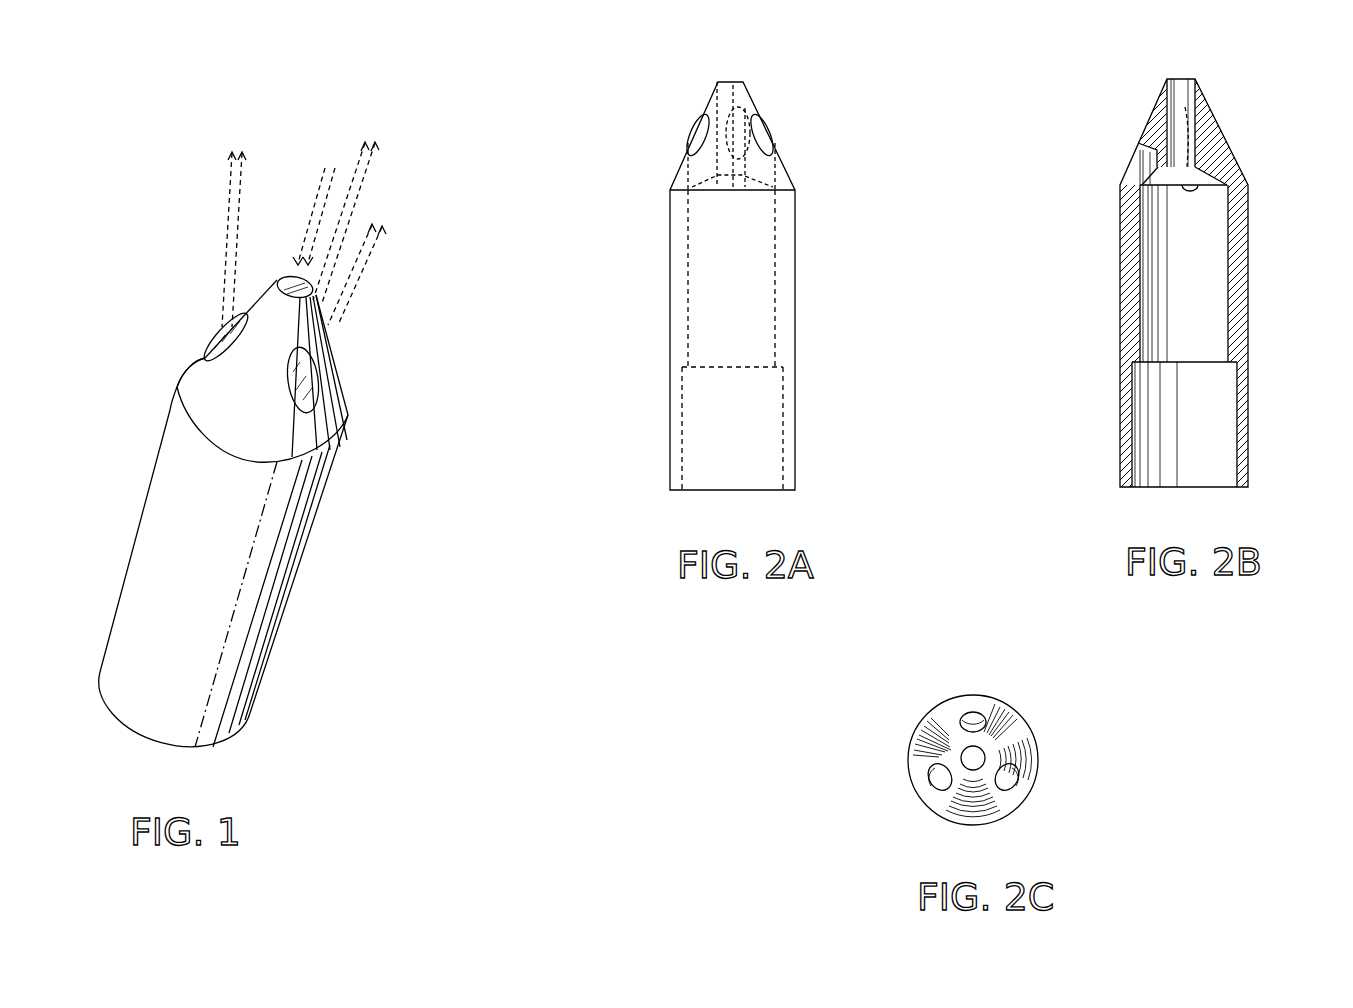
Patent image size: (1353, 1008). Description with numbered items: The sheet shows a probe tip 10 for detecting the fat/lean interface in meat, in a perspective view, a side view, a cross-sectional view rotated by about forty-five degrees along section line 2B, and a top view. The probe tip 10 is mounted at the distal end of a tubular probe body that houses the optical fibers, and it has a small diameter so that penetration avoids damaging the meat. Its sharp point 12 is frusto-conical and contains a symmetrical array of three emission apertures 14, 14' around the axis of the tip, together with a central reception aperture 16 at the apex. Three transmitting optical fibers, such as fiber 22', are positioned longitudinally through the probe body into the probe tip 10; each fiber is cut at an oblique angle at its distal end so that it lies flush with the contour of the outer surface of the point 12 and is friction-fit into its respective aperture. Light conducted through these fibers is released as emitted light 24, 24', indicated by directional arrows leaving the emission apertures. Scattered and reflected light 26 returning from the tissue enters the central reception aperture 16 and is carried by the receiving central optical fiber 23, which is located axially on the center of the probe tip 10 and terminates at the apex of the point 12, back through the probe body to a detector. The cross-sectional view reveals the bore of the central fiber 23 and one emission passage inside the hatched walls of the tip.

In FIG. 1, the probe tip 10 is at (368, 518).
In FIG. 2A, the probe tip 10 is at (847, 208).
In FIG. 2B, the probe tip 10 is at (1293, 210).
In FIG. 1, the point 12 is at (203, 400).
In FIG. 2A, the point 12 is at (753, 98).
In FIG. 2B, the point 12 is at (1227, 137).
In FIG. 2C, the point 12 is at (997, 818).
In FIG. 2A, the emission aperture 14 is at (731, 113).
In FIG. 2B, the emission aperture 14 is at (1237, 149).
In FIG. 2C, the emission aperture 14 is at (954, 694).
In FIG. 1, the emission aperture 14' is at (341, 380).
In FIG. 2A, the emission aperture 14' is at (785, 133).
In FIG. 2C, the emission aperture 14' is at (1048, 782).
In FIG. 1, the central reception aperture 16 is at (280, 298).
In FIG. 2B, the central reception aperture 16 is at (1190, 78).
In FIG. 2C, the central reception aperture 16 is at (963, 748).
In FIG. 1, the optical fiber 22' is at (376, 371).
In FIG. 1, the receiving central optical fiber 23 is at (288, 277).
In FIG. 1, the emitted light 24 is at (371, 222).
In FIG. 1, the emitted light 24' is at (385, 274).
In FIG. 1, the reflected light 26 is at (318, 187).
In FIG. 2C, the section line 2B is at (1037, 722).